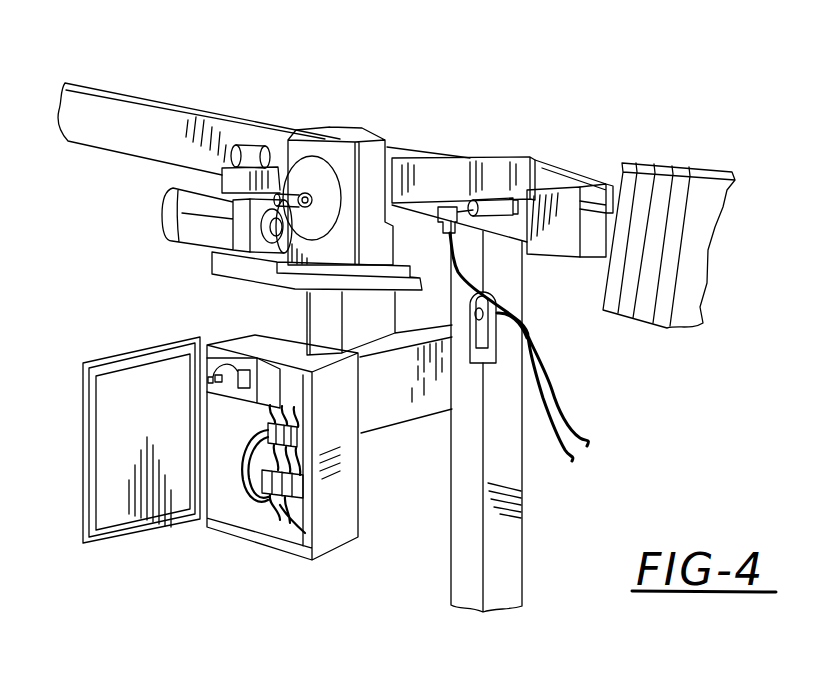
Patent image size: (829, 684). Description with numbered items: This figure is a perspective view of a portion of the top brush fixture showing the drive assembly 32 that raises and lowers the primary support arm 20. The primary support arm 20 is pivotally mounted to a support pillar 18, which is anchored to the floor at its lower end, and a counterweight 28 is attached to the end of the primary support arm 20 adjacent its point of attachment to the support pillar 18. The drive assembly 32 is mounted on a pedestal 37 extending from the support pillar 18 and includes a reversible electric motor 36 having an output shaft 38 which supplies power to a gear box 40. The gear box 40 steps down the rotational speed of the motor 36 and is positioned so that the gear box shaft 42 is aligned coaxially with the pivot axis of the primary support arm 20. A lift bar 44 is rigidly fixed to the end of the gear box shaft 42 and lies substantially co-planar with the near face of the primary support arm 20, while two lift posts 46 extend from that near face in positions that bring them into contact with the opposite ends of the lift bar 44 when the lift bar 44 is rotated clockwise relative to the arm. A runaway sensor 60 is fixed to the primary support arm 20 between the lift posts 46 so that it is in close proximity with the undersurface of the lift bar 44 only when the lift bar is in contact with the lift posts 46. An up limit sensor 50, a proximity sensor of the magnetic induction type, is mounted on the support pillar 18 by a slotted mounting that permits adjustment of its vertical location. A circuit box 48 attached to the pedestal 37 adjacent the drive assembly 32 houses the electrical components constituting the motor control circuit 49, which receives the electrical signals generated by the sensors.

The support pillar 18 is at (507, 567).
The primary support arm 20 is at (136, 123).
The counterweight 28 is at (705, 164).
The drive assembly 32 is at (166, 250).
The reversible electric motor 36 is at (163, 200).
The pedestal 37 is at (388, 413).
The output shaft 38 is at (278, 230).
The gear box 40 is at (343, 160).
The gear box shaft 42 is at (306, 192).
The lift bar 44 is at (508, 170).
The lift post 46 is at (258, 146).
The circuit box 48 is at (236, 487).
The motor control circuit 49 is at (268, 527).
The up limit sensor 50 is at (498, 343).
The runaway sensor 60 is at (442, 207).